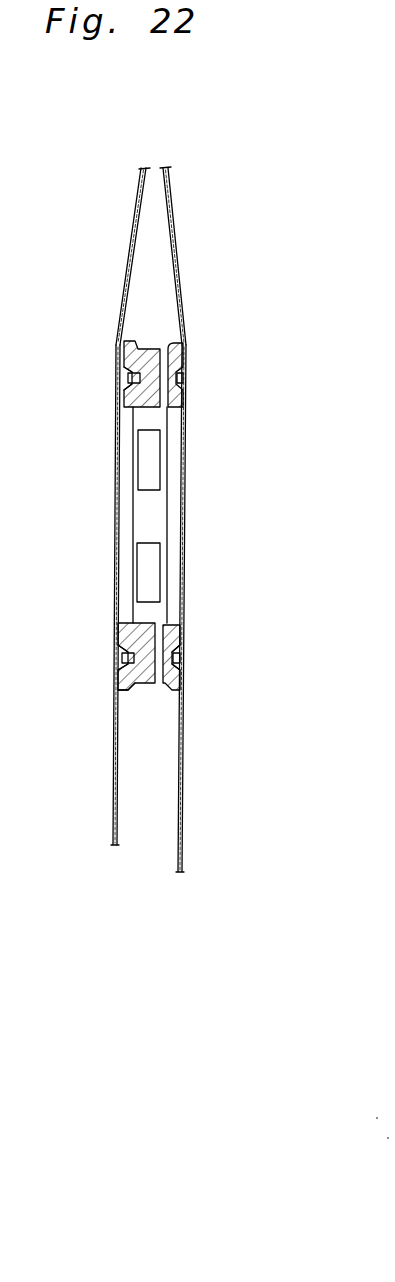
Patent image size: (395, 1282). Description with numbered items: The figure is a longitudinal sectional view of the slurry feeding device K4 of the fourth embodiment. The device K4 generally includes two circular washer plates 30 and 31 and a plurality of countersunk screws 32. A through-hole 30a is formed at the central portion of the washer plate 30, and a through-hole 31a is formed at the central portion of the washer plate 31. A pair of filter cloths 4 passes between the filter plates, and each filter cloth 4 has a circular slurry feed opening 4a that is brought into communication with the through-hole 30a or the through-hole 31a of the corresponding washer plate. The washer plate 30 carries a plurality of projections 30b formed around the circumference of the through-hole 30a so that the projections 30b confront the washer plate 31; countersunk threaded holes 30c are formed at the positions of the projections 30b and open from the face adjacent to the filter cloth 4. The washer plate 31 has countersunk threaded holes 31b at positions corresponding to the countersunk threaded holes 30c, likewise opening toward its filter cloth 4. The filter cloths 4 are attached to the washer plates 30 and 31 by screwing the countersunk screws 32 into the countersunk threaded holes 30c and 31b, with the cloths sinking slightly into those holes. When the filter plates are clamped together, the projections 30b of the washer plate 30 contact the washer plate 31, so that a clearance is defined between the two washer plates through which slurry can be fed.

The filter cloth 4 is at (139, 184).
The slurry feed opening 4a is at (184, 440).
The washer plate 30 is at (128, 694).
The through-hole 30a is at (128, 455).
The projection 30b is at (137, 417).
The countersunk threaded hole 30c is at (114, 688).
The washer plate 31 is at (170, 694).
The through-hole 31a is at (172, 557).
The countersunk threaded hole 31b is at (183, 632).
The countersunk screw 32 is at (126, 378).
The slurry feeding device K4 is at (196, 497).